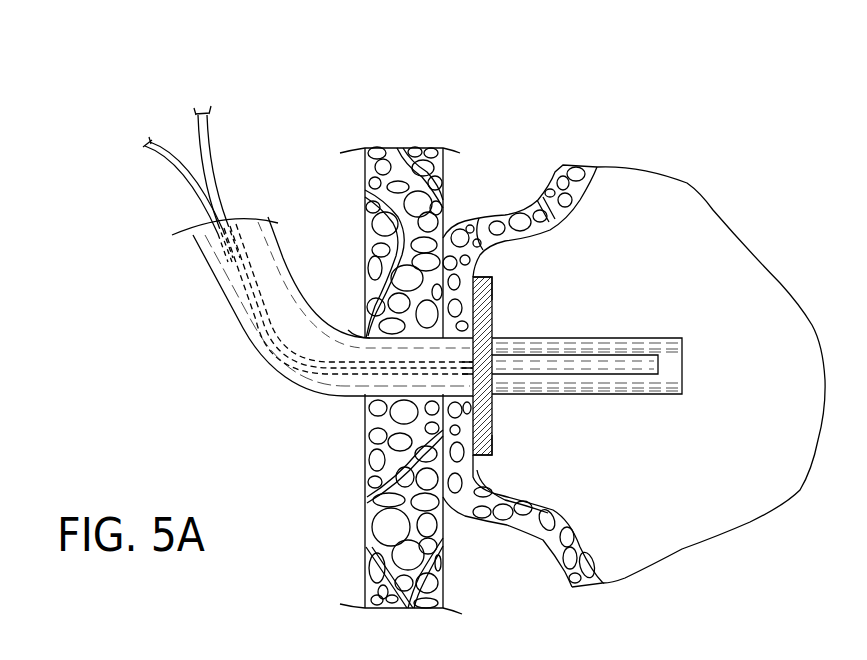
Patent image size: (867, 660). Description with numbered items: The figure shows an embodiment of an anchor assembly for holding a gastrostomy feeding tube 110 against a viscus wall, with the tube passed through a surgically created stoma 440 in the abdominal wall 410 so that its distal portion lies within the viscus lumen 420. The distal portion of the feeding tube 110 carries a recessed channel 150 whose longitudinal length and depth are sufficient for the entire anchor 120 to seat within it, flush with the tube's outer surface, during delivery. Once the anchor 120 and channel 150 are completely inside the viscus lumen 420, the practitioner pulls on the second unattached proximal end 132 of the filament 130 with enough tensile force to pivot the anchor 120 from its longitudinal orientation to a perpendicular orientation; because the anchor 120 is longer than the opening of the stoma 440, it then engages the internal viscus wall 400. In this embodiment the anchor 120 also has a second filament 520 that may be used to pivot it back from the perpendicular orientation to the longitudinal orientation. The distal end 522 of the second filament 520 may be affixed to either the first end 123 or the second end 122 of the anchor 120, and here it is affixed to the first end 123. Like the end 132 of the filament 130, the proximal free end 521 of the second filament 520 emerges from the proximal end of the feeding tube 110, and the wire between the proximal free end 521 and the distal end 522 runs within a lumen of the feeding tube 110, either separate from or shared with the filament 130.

The feeding tube 110 is at (282, 381).
The anchor 120 is at (483, 313).
The second end 122 is at (488, 278).
The first end 123 is at (487, 457).
The filament 130 is at (219, 198).
The second unattached proximal end 132 is at (209, 121).
The recessed channel 150 is at (627, 365).
The internal viscus wall 400 is at (476, 225).
The abdominal wall 410 is at (393, 188).
The viscus lumen 420 is at (740, 505).
The stoma 440 is at (365, 338).
The second filament 520 is at (235, 268).
The proximal free end 521 is at (146, 143).
The distal end 522 is at (476, 366).